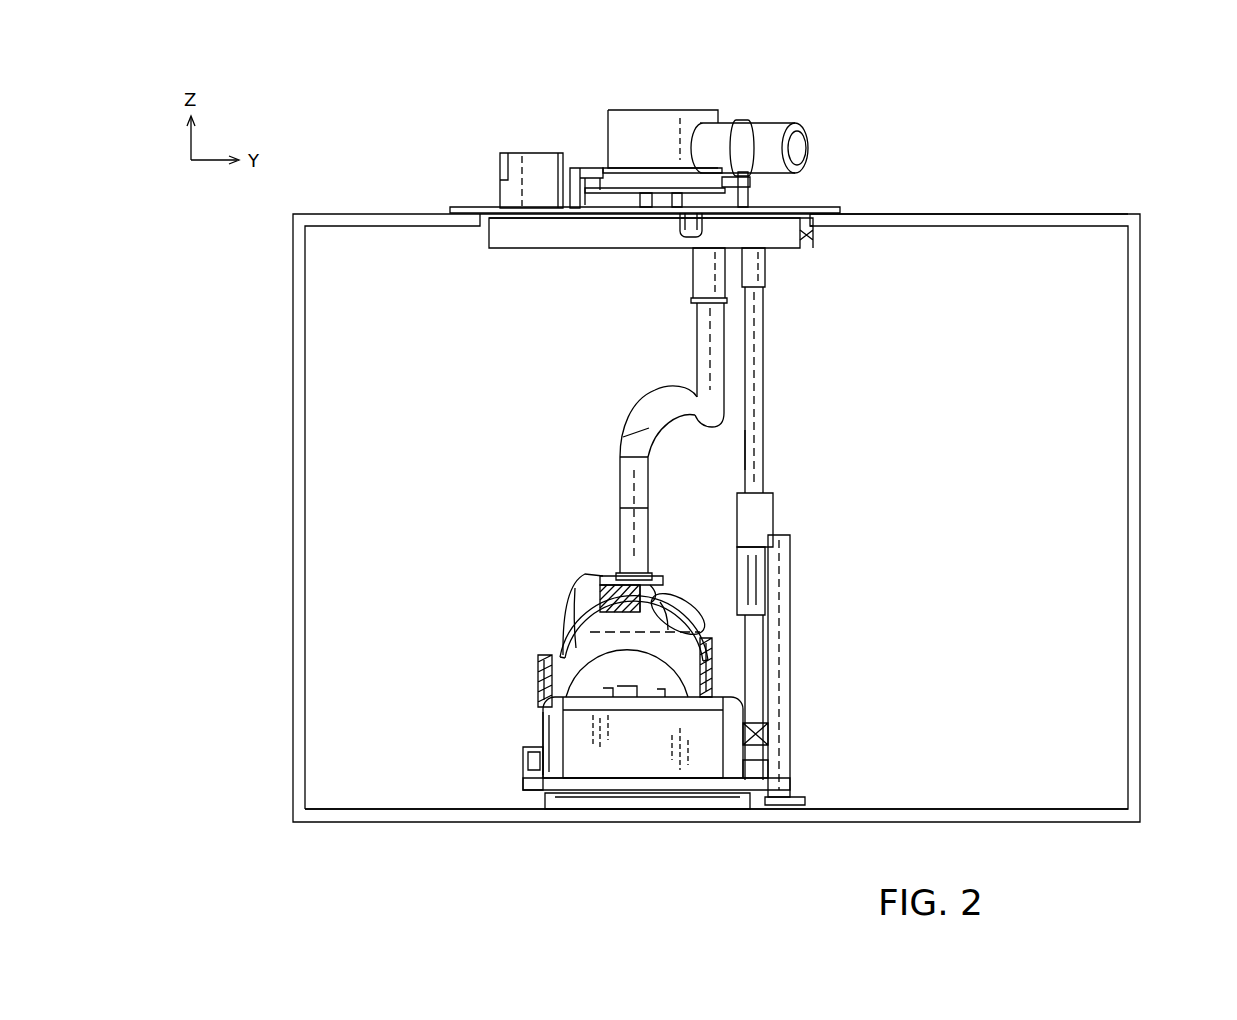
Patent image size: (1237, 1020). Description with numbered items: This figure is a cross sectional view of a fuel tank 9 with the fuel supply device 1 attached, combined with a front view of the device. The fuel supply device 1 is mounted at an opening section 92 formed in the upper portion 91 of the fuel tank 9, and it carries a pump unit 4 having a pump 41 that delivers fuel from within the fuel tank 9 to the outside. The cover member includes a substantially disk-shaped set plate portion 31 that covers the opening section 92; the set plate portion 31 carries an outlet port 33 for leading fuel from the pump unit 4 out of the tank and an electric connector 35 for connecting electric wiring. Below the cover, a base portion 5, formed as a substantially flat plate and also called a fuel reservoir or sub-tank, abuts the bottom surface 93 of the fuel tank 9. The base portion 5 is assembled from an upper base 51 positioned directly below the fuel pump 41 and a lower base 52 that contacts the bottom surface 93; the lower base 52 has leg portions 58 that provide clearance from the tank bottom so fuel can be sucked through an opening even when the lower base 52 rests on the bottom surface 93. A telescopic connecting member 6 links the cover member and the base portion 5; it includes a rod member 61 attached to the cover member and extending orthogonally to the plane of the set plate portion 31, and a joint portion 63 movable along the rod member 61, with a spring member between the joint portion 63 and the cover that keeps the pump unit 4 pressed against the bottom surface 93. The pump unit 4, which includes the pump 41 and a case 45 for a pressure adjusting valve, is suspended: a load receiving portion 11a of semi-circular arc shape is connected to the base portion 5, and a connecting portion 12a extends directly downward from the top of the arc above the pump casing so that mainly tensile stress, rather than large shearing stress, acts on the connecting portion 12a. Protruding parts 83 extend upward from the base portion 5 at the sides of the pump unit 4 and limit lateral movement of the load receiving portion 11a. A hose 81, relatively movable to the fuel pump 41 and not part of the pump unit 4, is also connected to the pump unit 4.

The fuel supply device 1 is at (932, 450).
The pump unit 4 is at (590, 650).
The base portion 5 is at (550, 728).
The connecting member 6 is at (782, 455).
The fuel tank 9 is at (1145, 505).
The load receiving portion 11a is at (568, 620).
The connecting portion 12a is at (636, 620).
The set plate portion 31 is at (470, 207).
The outlet port 33 is at (577, 190).
The electric connector 35 is at (540, 175).
The pump 41 is at (665, 610).
The case 45 is at (580, 598).
The upper base 51 is at (552, 745).
The lower base 52 is at (525, 788).
The leg portions 58 is at (557, 809).
The rod member 61 is at (766, 375).
The joint portion 63 is at (774, 510).
The hose 81 is at (668, 400).
The protruding parts 83 is at (540, 680).
The upper portion 91 is at (1010, 228).
The opening section 92 is at (814, 248).
The bottom surface 93 is at (1022, 809).